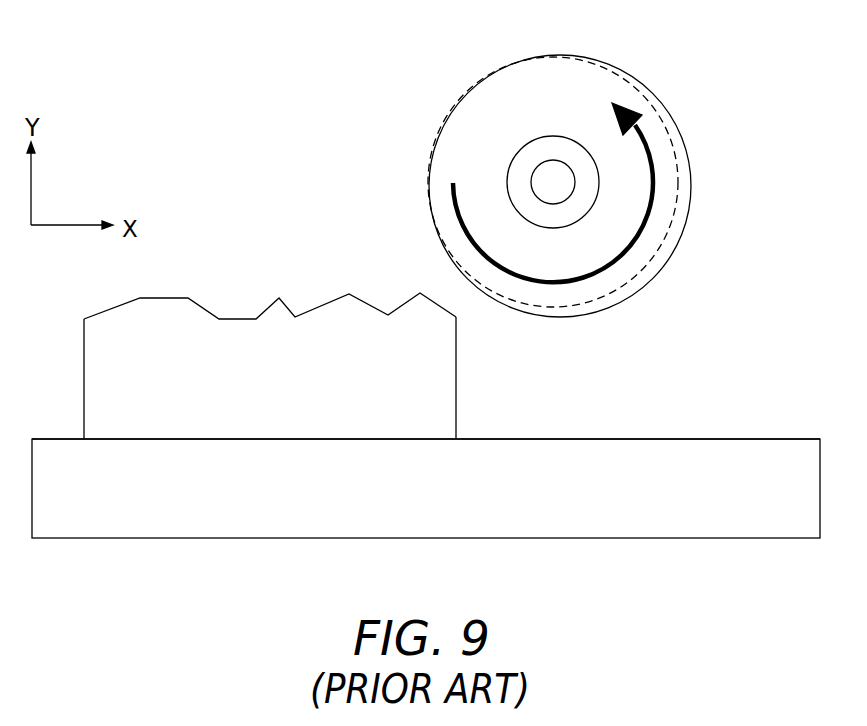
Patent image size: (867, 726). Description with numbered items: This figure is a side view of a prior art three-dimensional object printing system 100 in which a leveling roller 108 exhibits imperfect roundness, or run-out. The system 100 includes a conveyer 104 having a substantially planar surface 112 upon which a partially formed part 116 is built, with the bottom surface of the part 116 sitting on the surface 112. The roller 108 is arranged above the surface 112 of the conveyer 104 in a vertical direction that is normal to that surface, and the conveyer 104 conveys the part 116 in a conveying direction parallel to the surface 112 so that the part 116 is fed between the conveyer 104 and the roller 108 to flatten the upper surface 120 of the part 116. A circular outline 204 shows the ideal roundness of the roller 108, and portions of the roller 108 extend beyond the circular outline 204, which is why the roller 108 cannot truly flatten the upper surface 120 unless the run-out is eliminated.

The three-dimensional object printing system 100 is at (186, 102).
The conveyer 104 is at (233, 515).
The leveling roller 108 is at (473, 125).
The substantially planar surface 112 is at (673, 440).
The partially formed part 116 is at (456, 378).
The upper surface 120 is at (203, 307).
The circular outline 204 is at (672, 145).